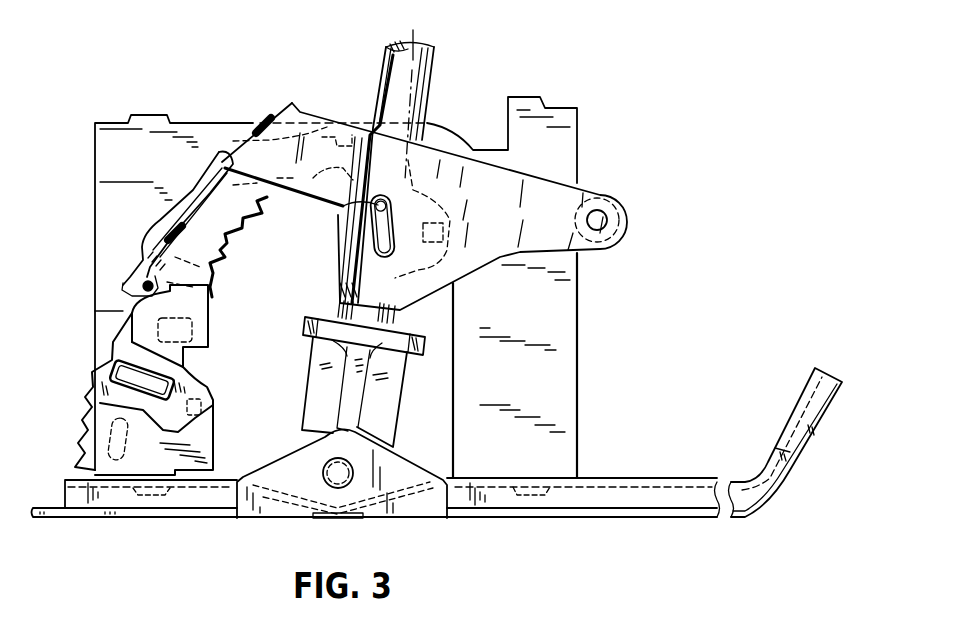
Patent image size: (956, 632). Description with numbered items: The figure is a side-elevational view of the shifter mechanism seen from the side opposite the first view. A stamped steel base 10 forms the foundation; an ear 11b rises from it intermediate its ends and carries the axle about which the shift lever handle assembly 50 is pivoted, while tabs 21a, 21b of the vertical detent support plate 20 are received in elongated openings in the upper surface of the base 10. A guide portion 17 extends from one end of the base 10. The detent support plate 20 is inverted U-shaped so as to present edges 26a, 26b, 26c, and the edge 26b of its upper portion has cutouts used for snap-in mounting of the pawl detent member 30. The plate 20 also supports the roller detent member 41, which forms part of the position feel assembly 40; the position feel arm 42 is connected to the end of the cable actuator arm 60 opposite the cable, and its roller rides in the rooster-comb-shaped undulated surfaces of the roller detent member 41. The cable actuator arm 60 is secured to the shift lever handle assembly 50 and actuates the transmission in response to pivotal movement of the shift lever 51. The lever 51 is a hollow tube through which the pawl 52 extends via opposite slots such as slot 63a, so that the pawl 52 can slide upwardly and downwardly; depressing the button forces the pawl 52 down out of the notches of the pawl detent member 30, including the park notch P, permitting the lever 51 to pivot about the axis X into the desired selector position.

The stamped steel base 10 is at (687, 503).
The ear 11b is at (415, 508).
The bent guide bar 17 is at (792, 472).
The detent support plate 20 is at (574, 362).
The tab 21a is at (527, 503).
The tab 21b is at (155, 505).
The edge 26a is at (455, 435).
The edge 26b is at (278, 200).
The edge 26c is at (214, 443).
The pawl detent member 30 is at (224, 237).
The position feel assembly 40 is at (106, 261).
The roller detent member 41 is at (106, 360).
The position feel arm 42 is at (125, 283).
The shift lever handle assembly 50 is at (397, 393).
The shift lever 51 is at (424, 99).
The pawl 52 is at (343, 206).
The cable actuator arm 60 is at (485, 160).
The slot 63a is at (366, 258).
The park notch P is at (413, 94).
The pivot axis X is at (330, 478).